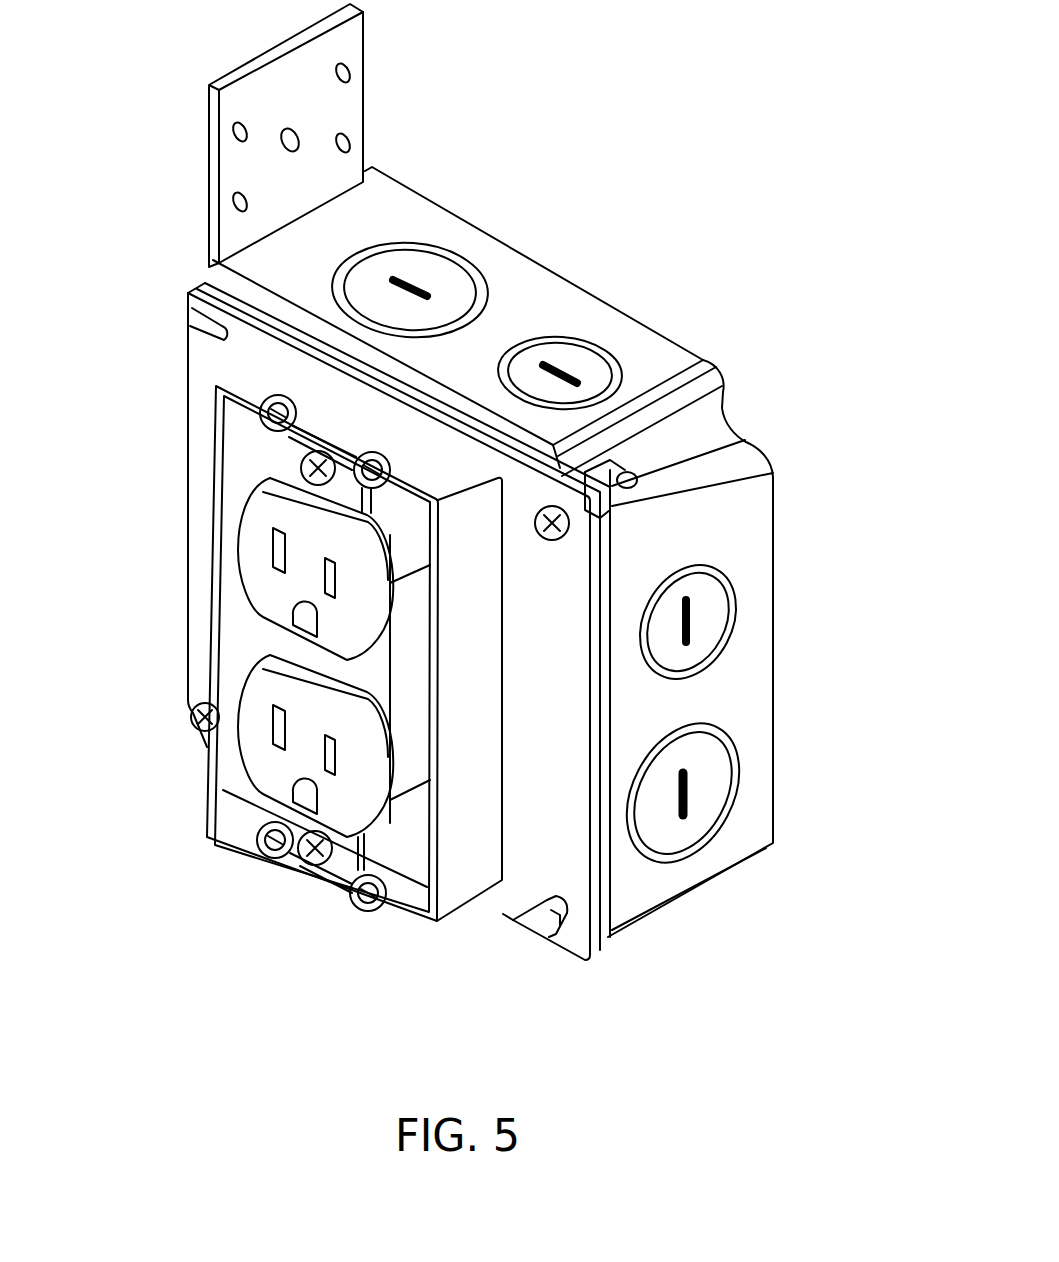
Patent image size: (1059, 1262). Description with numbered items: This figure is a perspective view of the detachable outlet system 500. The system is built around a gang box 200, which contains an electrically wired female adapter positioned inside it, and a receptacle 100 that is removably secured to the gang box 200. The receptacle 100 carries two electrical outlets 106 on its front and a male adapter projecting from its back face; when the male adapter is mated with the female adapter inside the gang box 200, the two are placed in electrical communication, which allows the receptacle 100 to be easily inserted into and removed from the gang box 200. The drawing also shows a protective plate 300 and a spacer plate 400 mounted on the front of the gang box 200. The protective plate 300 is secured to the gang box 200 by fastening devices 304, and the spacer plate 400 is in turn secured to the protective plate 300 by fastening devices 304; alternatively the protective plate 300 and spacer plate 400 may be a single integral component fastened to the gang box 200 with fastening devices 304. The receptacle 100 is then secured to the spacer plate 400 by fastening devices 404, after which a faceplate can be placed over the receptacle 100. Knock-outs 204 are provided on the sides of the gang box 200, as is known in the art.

The detachable outlet system 500 is at (580, 155).
The gang box 200 is at (545, 470).
The knock-outs 204 is at (585, 367).
The protective plate 300 is at (605, 880).
The fastening devices 304 is at (545, 545).
The spacer plate 400 is at (468, 848).
The fastening devices 404 is at (292, 466).
The receptacle 100 is at (273, 650).
The electrical outlets 106 is at (263, 585).